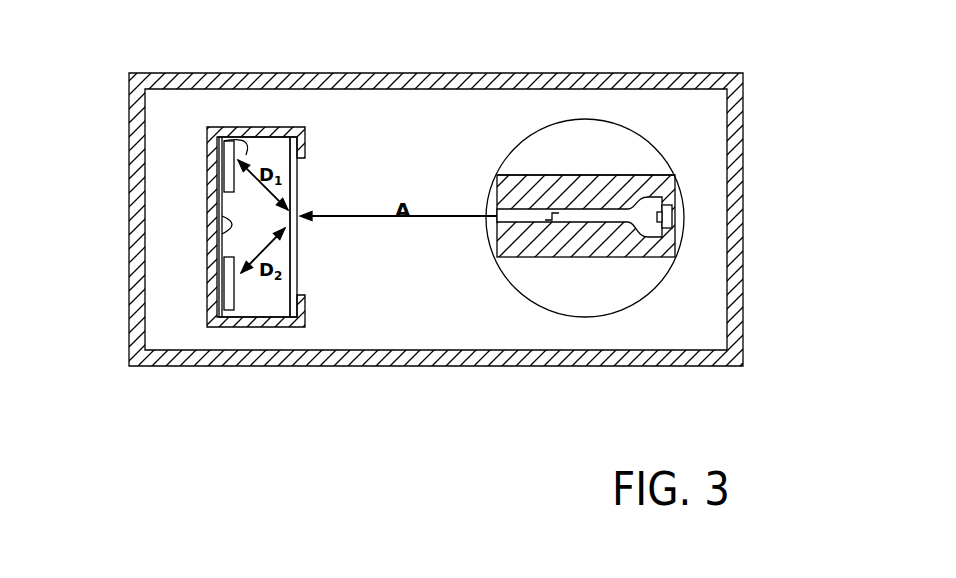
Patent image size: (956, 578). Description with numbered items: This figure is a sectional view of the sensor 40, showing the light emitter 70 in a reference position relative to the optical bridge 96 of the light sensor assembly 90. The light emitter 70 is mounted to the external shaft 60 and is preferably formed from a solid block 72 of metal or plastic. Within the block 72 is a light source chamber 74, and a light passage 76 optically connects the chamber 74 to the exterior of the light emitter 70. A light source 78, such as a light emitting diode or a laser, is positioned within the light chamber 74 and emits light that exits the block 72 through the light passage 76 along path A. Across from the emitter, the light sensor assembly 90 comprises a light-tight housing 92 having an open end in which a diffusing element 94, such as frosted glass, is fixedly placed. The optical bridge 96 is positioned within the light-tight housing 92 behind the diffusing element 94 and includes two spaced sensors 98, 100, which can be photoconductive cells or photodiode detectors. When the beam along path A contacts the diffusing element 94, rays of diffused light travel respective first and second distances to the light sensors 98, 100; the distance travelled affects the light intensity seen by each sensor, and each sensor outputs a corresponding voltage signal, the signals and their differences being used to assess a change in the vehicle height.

The sensor 40 is at (795, 31).
The external shaft 60 is at (618, 125).
The light emitter 70 is at (512, 163).
The solid block 72 is at (557, 185).
The light source chamber 74 is at (655, 236).
The light passage 76 is at (552, 224).
The light source 78 is at (673, 210).
The light sensor assembly 90 is at (280, 335).
The light-tight housing 92 is at (255, 322).
The diffusing element 94 is at (302, 272).
The optical bridge 96 is at (232, 230).
The first light sensor 98 is at (226, 140).
The second light sensor 100 is at (240, 303).